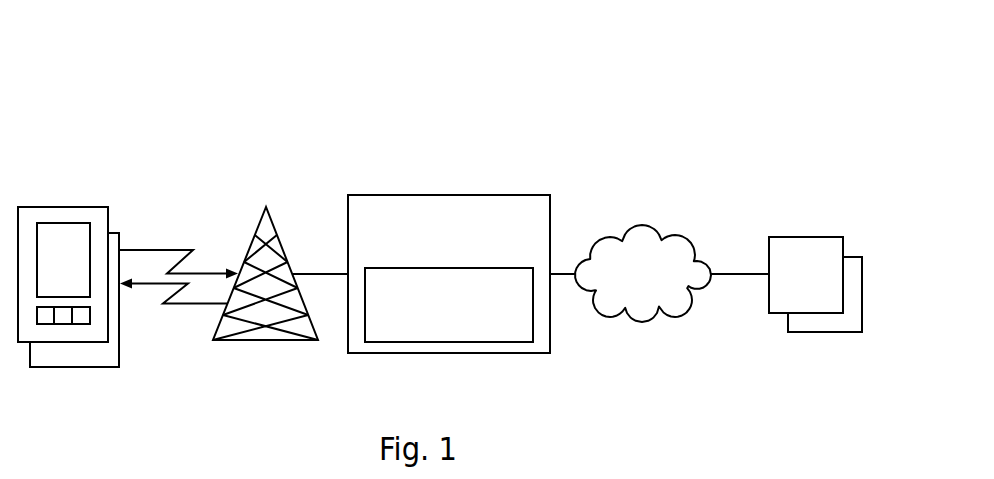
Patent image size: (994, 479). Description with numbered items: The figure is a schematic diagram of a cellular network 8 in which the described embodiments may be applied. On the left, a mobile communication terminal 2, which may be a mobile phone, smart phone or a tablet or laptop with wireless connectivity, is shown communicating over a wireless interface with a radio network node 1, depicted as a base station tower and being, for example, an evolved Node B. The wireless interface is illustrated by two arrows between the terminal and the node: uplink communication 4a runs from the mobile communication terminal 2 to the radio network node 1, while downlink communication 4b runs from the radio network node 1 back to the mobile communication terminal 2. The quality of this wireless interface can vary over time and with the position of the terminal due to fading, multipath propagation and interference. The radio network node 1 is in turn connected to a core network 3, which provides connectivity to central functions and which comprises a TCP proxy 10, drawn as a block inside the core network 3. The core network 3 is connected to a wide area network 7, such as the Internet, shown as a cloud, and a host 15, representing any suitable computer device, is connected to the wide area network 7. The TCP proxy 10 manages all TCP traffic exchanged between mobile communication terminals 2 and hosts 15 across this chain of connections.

The radio network node 1 is at (281, 238).
The mobile communication terminal 2 is at (70, 207).
The core network 3 is at (440, 236).
The uplink communication 4a is at (160, 249).
The downlink communication 4b is at (190, 307).
The wide area network 7 is at (643, 273).
The cellular network 8 is at (543, 142).
The TCP proxy 10 is at (432, 300).
The host 15 is at (791, 287).